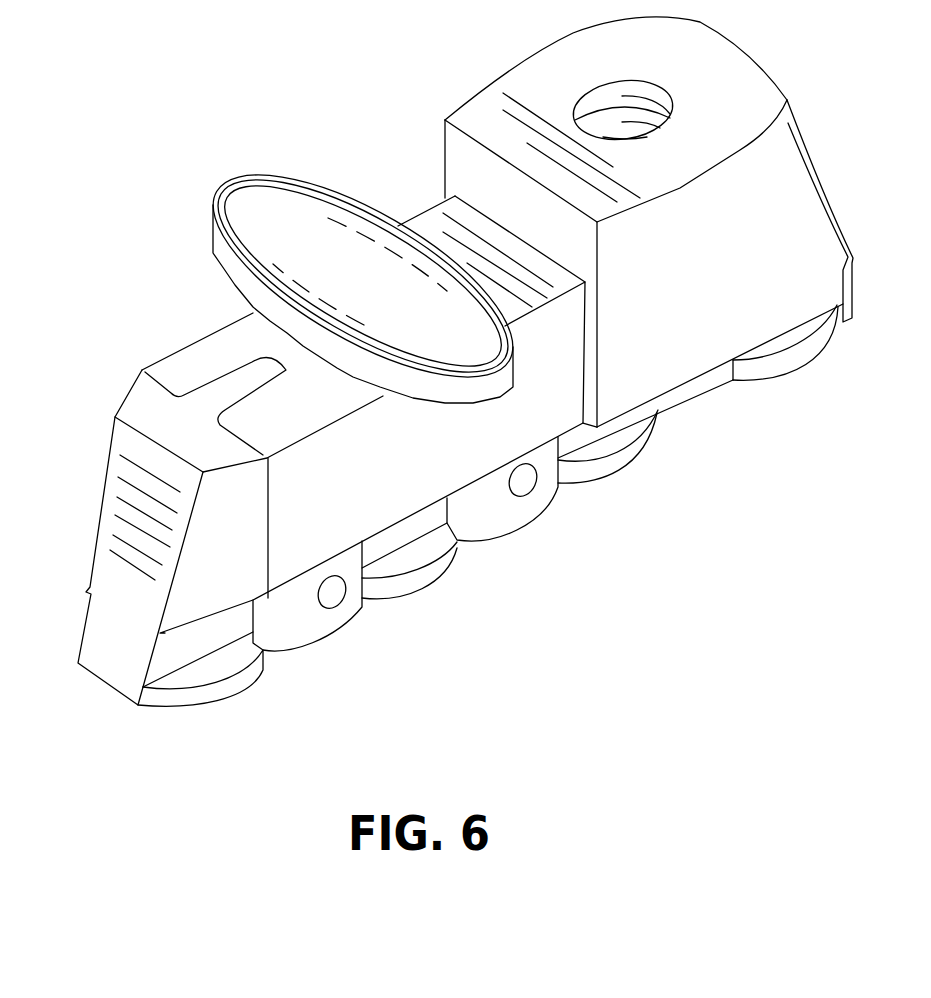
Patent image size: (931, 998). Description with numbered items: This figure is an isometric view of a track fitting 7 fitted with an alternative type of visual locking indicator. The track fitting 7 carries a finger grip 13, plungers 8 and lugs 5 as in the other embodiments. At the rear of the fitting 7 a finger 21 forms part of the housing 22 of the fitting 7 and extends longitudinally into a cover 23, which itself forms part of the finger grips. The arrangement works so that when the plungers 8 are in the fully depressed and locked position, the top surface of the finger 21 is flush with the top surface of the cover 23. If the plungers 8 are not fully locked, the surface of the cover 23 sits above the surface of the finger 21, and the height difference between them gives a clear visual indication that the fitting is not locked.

The lug 5 is at (218, 668).
The track fitting 7 is at (410, 178).
The plunger 8 is at (310, 617).
The finger grip 13 is at (260, 212).
The finger 21 is at (240, 378).
The housing 22 is at (133, 527).
The cover 23 is at (282, 417).